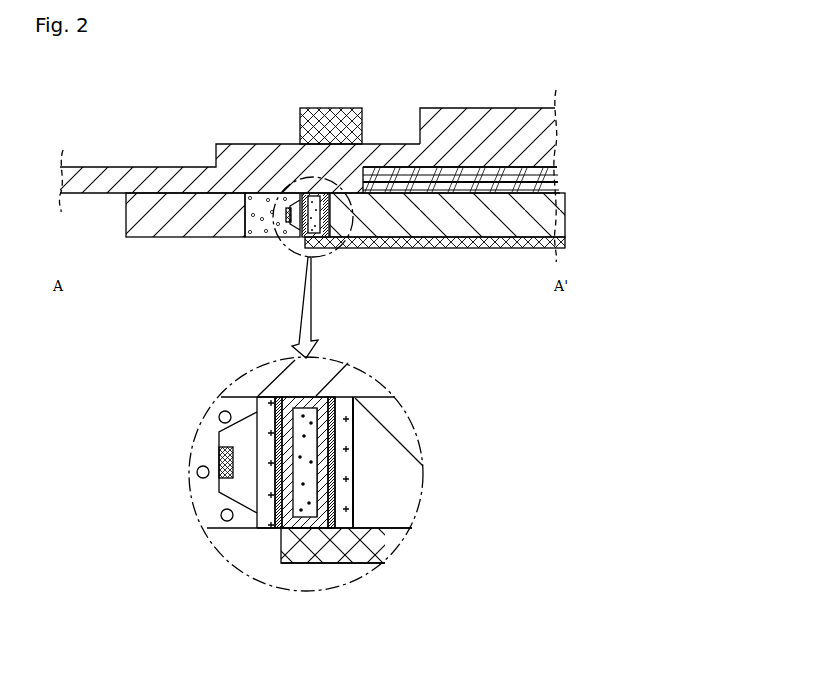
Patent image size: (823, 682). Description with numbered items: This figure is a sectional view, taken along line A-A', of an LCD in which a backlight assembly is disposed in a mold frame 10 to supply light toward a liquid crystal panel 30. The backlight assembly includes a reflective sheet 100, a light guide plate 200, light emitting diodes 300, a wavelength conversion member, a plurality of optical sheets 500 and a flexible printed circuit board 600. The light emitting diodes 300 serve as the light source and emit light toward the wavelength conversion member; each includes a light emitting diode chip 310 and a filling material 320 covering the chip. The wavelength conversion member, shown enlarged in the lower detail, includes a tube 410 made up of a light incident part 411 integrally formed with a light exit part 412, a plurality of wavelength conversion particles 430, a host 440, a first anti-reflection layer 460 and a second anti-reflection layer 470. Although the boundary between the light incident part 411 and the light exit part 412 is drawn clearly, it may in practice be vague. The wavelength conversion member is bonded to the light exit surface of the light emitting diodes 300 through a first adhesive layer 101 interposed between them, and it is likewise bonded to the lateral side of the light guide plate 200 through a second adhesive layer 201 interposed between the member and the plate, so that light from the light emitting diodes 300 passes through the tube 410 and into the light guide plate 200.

The mold frame 10 is at (158, 226).
The liquid crystal panel 30 is at (482, 120).
The reflective sheet 100 is at (375, 241).
The first adhesive layer 101 is at (257, 490).
The light guide plate 200 is at (433, 222).
The second adhesive layer 201 is at (356, 503).
The light emitting diodes 300 is at (260, 226).
The light emitting diode chip 310 is at (218, 462).
The filling material 320 is at (218, 490).
The tube 410 is at (277, 632).
The light incident part 411 is at (298, 520).
The light exit part 412 is at (311, 520).
The wavelength conversion particles 430 is at (336, 396).
The host 440 is at (264, 394).
The first anti-reflection layer 460 is at (274, 519).
The second anti-reflection layer 470 is at (341, 533).
The optical sheets 500 is at (488, 184).
The flexible printed circuit board 600 is at (160, 186).